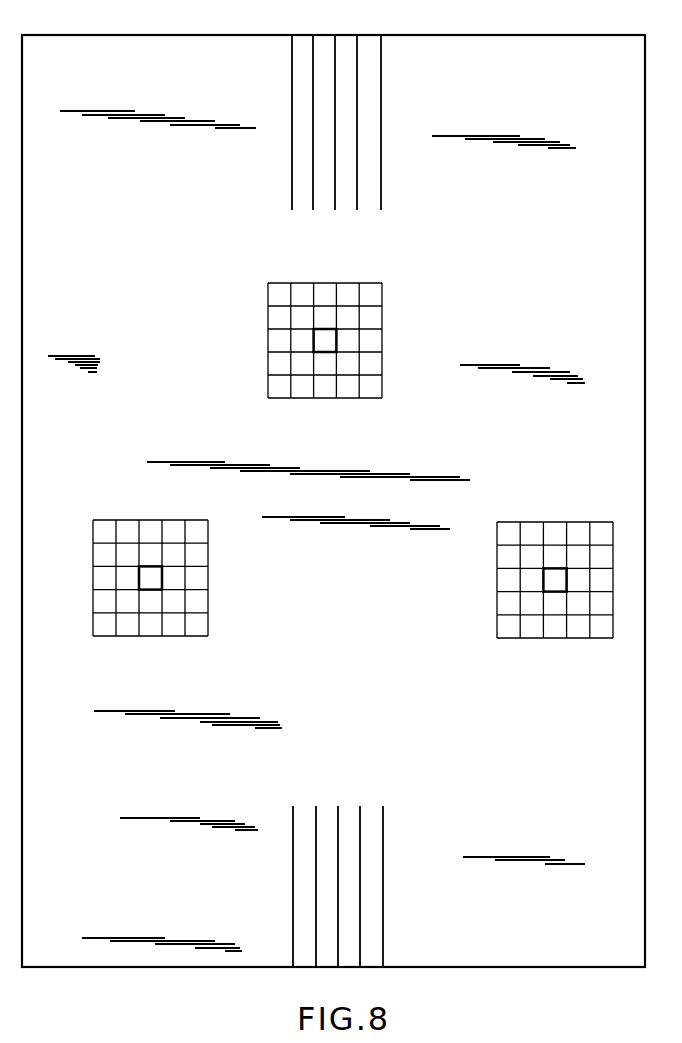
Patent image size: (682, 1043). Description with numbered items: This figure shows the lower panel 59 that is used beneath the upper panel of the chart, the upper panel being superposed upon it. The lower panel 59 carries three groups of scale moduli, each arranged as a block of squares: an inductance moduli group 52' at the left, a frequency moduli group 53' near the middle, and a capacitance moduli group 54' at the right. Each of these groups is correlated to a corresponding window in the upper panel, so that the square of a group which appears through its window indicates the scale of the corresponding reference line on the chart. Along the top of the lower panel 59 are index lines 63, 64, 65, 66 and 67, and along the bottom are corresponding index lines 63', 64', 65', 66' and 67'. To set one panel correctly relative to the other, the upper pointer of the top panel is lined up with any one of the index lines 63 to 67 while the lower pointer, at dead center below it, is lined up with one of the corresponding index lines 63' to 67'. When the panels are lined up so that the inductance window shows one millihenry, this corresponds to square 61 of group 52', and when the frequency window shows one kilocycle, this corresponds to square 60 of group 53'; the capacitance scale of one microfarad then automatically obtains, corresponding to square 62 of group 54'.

The lower panel 59 is at (633, 349).
The square of group 53' 60 is at (330, 339).
The square of group 52' 61 is at (156, 573).
The square of group 54' 62 is at (558, 575).
The inductance moduli group 52' is at (144, 590).
The frequency moduli group 53' is at (312, 352).
The capacitance moduli group 54' is at (542, 592).
The index line 63 is at (274, 110).
The index line 64 is at (298, 110).
The index line 65 is at (331, 110).
The index line 66 is at (360, 110).
The index line 67 is at (389, 110).
The corresponding index line 63' is at (313, 870).
The corresponding index line 64' is at (339, 870).
The corresponding index line 65' is at (363, 870).
The corresponding index line 66' is at (388, 870).
The corresponding index line 67' is at (414, 870).